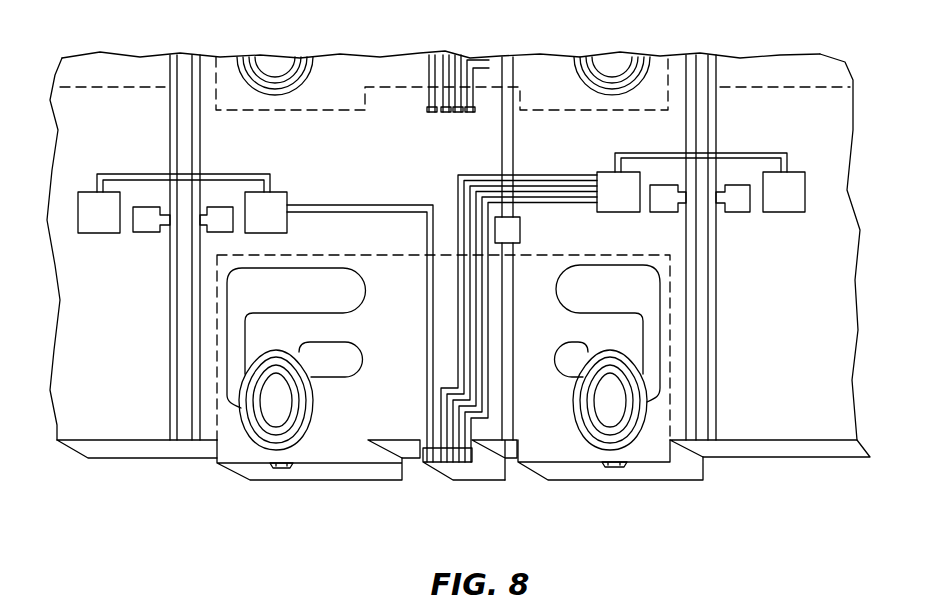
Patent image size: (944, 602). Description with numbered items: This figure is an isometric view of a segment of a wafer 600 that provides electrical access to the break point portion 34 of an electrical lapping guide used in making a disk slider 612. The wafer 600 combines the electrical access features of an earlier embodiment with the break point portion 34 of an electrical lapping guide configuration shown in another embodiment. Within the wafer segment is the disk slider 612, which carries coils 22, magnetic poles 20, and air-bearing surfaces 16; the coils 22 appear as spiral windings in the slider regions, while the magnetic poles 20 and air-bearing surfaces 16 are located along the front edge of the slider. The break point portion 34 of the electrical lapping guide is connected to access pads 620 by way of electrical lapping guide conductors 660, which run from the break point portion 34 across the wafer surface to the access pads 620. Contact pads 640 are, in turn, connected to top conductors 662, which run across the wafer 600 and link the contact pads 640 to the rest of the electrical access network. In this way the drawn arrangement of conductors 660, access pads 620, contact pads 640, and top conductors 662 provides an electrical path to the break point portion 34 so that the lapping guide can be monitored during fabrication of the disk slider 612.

The wafer 600 is at (381, 25).
The disk slider 612 is at (412, 250).
The air-bearing surfaces 16 is at (352, 480).
The magnetic poles 20 is at (282, 470).
The coils 22 is at (313, 420).
The break point portion 34 is at (472, 488).
The access pads 620 is at (98, 234).
The contact pads 640 is at (150, 233).
The electrical lapping guide conductors 660 is at (152, 172).
The top conductors 662 is at (202, 150).